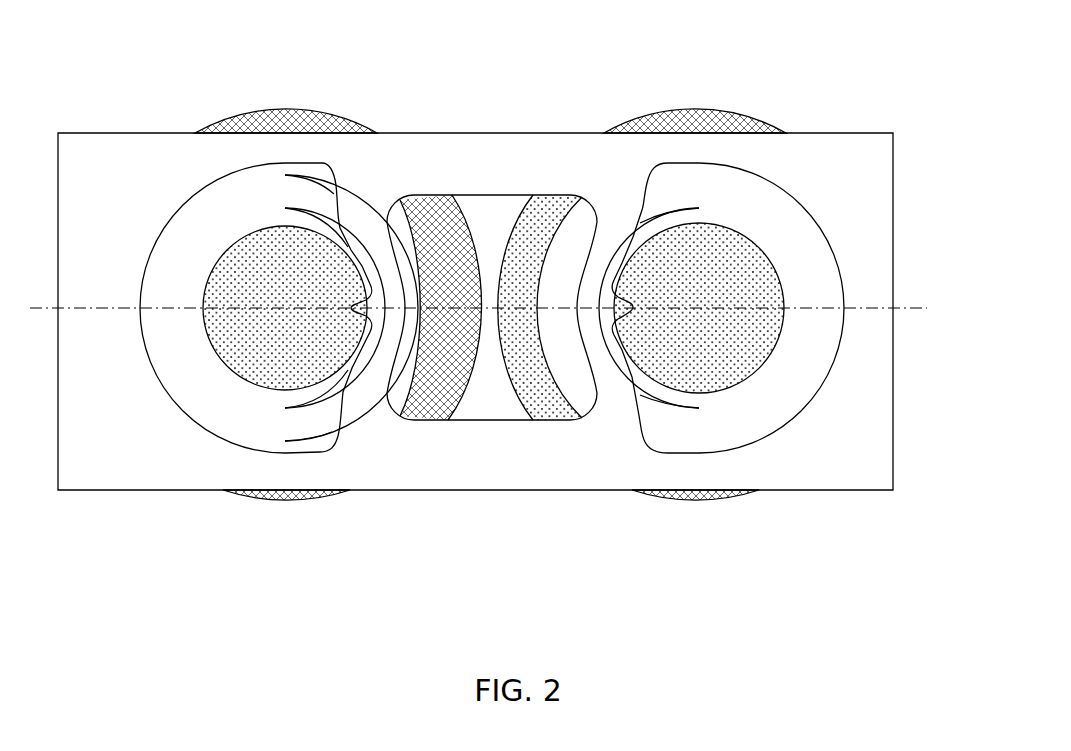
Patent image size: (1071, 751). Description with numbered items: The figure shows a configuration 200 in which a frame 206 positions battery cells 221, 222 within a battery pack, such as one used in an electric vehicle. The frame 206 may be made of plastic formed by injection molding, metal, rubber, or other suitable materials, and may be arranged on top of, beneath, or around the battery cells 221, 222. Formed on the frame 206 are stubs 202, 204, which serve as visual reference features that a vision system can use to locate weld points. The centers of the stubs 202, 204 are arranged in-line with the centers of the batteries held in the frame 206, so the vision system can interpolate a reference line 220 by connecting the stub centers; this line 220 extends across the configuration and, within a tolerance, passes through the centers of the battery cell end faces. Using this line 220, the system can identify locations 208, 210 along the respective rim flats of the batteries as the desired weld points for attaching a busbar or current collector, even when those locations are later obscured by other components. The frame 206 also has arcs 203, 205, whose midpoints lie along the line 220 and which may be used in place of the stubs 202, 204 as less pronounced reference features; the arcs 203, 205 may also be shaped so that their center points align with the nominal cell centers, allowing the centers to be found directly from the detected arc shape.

The configuration 200 is at (460, 114).
The stub 202 is at (364, 340).
The arc 203 is at (422, 350).
The stub 204 is at (630, 357).
The arc 205 is at (583, 357).
The frame 206 is at (795, 492).
The location 208 is at (458, 357).
The location 210 is at (532, 323).
The line 220 is at (927, 310).
The battery cell 221 is at (288, 97).
The battery cell 222 is at (703, 97).